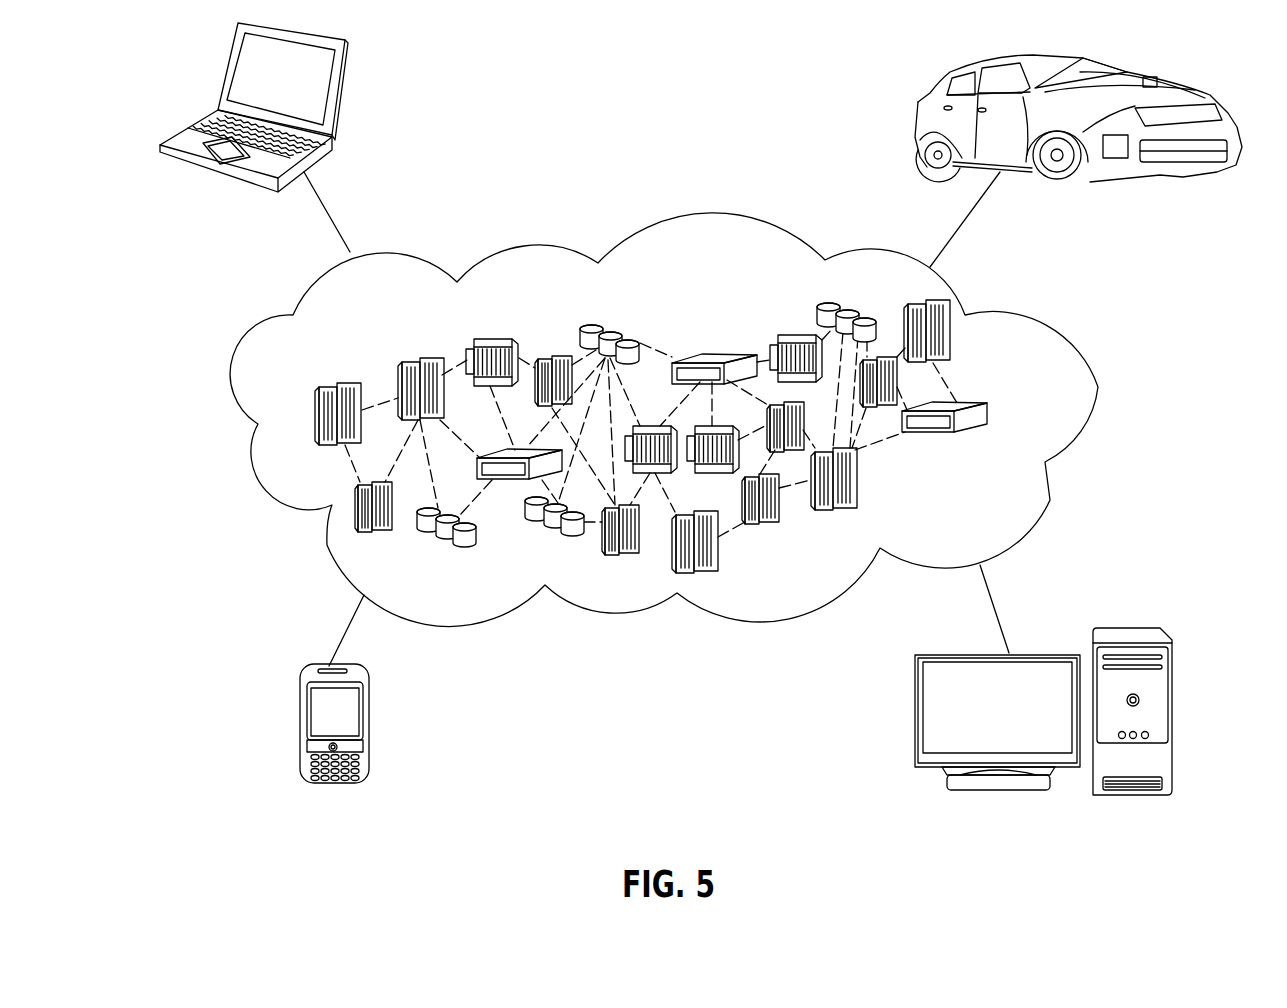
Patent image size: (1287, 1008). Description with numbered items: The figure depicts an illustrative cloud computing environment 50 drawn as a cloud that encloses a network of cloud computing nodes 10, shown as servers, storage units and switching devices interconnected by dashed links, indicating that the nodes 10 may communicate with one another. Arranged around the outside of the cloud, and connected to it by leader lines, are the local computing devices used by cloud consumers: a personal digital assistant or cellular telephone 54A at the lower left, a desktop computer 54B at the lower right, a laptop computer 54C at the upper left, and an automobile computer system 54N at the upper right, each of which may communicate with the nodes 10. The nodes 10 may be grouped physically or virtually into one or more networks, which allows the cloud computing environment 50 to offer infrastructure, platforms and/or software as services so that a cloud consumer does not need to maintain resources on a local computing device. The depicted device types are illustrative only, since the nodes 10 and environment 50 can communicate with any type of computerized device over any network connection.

The cloud computing environment 50 is at (1055, 325).
The cloud computing nodes 10 is at (1030, 415).
The personal digital assistant (PDA) or cellular telephone 54A is at (300, 727).
The desktop computer 54B is at (1137, 628).
The laptop computer 54C is at (337, 92).
The automobile computer system 54N is at (925, 102).